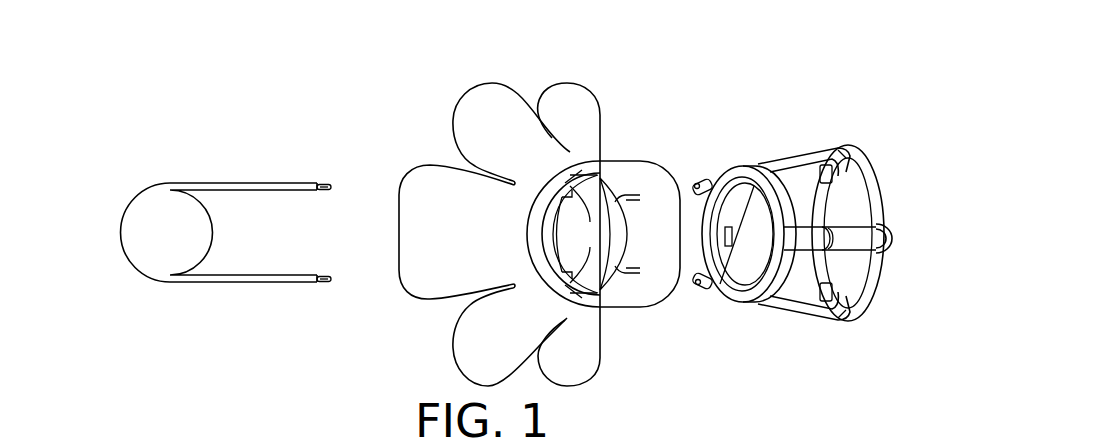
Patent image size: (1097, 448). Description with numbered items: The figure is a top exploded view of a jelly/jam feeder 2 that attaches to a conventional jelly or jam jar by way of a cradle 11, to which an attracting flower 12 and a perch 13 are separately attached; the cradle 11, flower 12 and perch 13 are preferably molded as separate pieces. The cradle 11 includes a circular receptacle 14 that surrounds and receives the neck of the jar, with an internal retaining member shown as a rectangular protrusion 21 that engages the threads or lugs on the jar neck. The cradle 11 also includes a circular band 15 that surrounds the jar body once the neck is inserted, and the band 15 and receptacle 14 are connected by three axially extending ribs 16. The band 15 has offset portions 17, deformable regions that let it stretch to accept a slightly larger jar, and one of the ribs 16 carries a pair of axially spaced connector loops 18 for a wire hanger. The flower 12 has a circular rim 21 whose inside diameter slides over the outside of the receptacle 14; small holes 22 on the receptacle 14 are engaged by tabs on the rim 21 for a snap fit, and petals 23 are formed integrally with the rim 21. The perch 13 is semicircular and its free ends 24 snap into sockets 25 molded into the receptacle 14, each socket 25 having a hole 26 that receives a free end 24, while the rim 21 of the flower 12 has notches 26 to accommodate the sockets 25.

The jelly/jam feeder 2 is at (89, 84).
The cradle 11 is at (882, 127).
The attracting flower 12 is at (441, 246).
The perch 13 is at (150, 188).
The circular receptacle 14 is at (750, 163).
The circular band 15 is at (877, 190).
The axially extending ribs 16 is at (826, 149).
The offset portions 17 is at (835, 172).
The connector loops 18 is at (882, 232).
The circular rim 21 is at (673, 244).
The small holes 22 is at (764, 163).
The petals 23 is at (475, 118).
The free ends 24 is at (331, 186).
The sockets 25 is at (706, 178).
The hole 26 is at (693, 180).